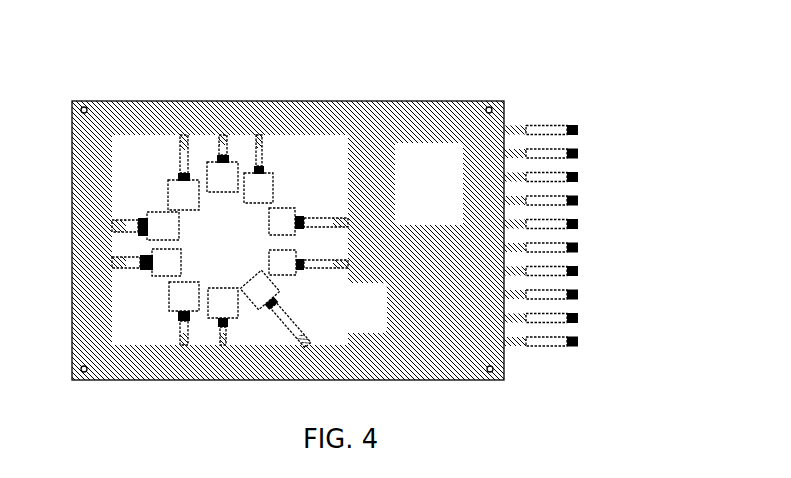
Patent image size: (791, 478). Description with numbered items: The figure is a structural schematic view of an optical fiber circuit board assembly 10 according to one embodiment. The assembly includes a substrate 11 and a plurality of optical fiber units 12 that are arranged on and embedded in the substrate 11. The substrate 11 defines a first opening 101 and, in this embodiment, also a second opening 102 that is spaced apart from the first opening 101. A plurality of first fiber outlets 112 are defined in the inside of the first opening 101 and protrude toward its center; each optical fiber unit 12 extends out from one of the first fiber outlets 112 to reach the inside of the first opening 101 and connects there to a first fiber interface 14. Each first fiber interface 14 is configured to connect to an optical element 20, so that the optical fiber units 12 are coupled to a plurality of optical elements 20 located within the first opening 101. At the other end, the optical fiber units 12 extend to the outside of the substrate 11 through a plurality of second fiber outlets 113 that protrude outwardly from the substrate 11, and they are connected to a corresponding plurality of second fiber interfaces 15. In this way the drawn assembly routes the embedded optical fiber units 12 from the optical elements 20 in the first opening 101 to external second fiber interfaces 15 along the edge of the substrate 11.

The optical fiber circuit board assembly 10 is at (52, 47).
The substrate 11 is at (345, 112).
The first opening 101 is at (146, 157).
The second opening 102 is at (450, 168).
The optical element 20 is at (218, 178).
The first fiber interface 14 is at (222, 160).
The first fiber outlet 112 is at (226, 145).
The optical fiber unit 12 is at (229, 160).
The second fiber outlet 113 is at (515, 127).
The second fiber interface 15 is at (575, 123).